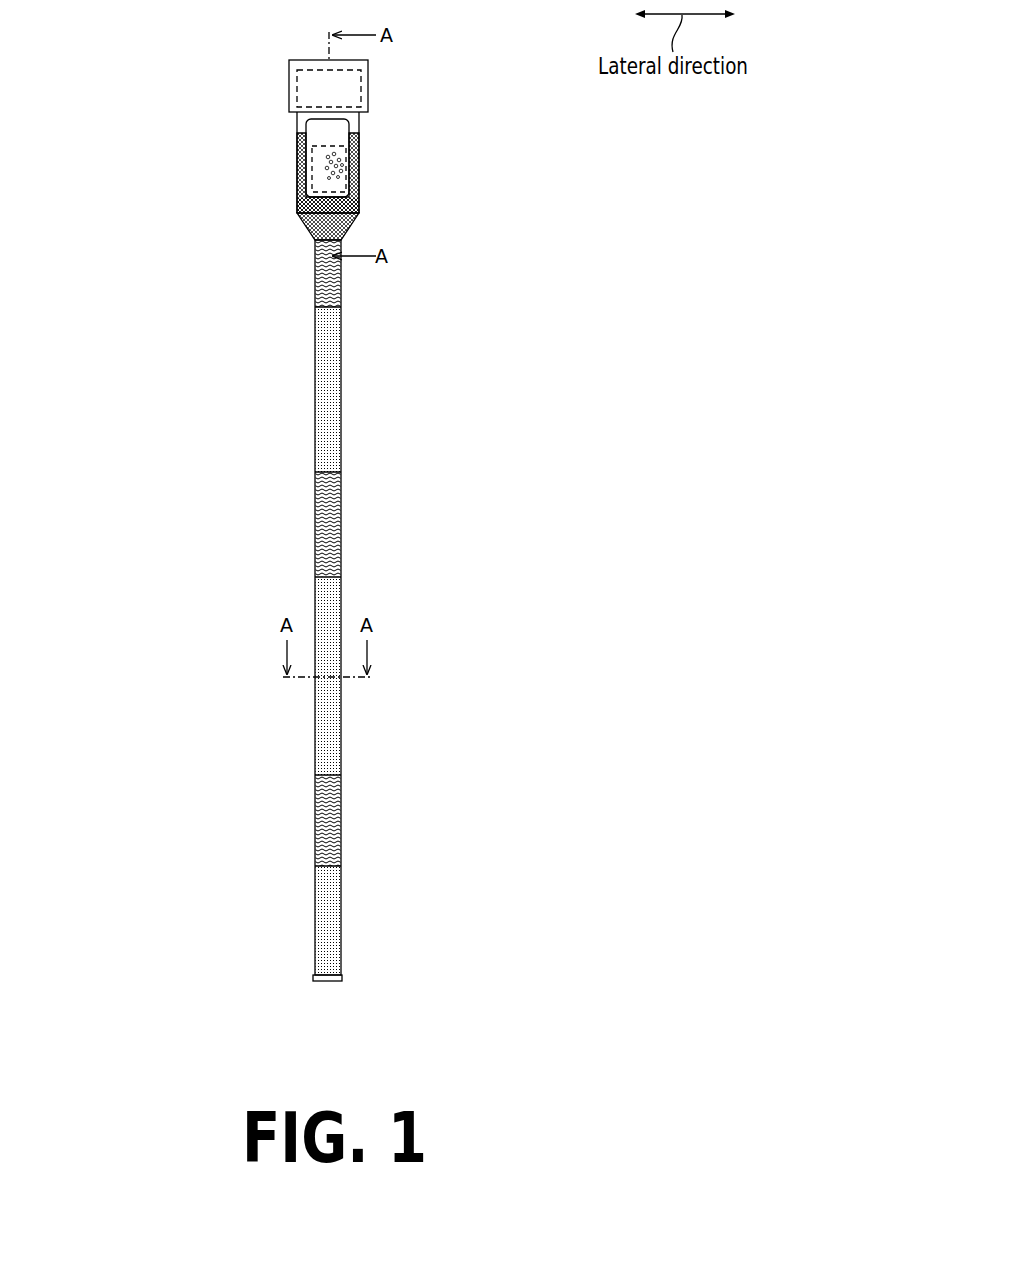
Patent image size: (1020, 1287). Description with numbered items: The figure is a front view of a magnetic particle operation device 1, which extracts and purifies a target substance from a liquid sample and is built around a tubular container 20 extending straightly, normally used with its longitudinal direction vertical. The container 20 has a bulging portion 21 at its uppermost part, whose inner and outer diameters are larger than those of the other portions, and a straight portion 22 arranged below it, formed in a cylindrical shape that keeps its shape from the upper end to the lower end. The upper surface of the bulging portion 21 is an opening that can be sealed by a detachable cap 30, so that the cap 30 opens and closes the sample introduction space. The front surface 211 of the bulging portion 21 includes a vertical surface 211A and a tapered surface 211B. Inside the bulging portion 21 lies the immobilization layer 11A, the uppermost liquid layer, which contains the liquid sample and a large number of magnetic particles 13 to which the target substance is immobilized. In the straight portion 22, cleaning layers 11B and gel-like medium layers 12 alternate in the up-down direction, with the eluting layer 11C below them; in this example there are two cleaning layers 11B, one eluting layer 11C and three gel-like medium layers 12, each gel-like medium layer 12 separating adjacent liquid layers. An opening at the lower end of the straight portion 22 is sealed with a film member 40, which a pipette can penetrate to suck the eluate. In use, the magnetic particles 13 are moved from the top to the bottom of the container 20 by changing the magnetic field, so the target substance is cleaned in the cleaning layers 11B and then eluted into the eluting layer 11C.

The magnetic particle operation device 1 is at (204, 306).
The immobilization layer 11A is at (298, 205).
The cleaning layer 11B is at (316, 383).
The eluting layer 11C is at (316, 922).
The gel-like medium layer 12 is at (316, 272).
The magnetic particles 13 is at (357, 178).
The container 20 is at (344, 420).
The bulging portion 21 is at (365, 142).
The front surface 211 is at (298, 143).
The vertical surface 211A is at (345, 198).
The tapered surface 211B is at (357, 218).
The straight portion 22 is at (342, 340).
The cap 30 is at (368, 78).
The film member 40 is at (326, 982).